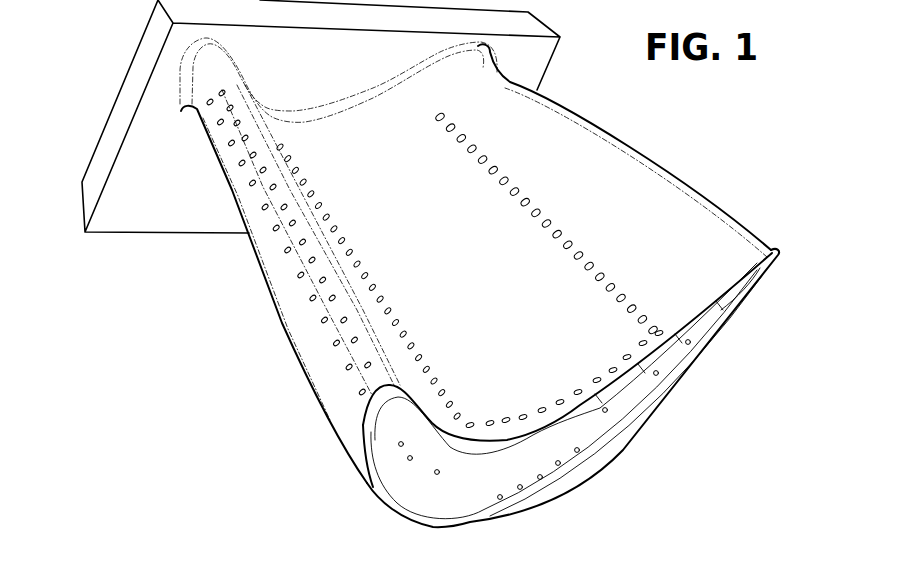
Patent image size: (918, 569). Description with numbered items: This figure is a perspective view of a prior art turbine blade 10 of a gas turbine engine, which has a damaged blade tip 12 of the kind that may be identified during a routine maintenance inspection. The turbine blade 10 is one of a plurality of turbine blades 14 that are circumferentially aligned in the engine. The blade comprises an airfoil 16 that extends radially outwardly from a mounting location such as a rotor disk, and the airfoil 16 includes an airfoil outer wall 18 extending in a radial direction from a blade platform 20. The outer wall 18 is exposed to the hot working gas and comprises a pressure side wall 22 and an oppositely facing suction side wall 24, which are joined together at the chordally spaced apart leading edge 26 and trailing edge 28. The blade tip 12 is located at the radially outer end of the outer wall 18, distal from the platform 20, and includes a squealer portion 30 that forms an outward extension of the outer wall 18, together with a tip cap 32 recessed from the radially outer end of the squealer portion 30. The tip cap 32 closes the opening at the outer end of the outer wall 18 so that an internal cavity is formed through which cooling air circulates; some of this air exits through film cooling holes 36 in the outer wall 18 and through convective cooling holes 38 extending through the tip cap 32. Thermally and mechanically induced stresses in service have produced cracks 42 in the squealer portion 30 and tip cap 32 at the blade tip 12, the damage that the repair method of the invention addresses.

The turbine blade 10 is at (70, 121).
The blade tip 12 is at (461, 503).
The turbine blades 14 is at (177, 377).
The airfoil 16 is at (260, 294).
The airfoil outer wall 18 is at (250, 203).
The blade platform 20 is at (167, 80).
The pressure side wall 22 is at (645, 185).
The suction side wall 24 is at (333, 390).
The leading edge 26 is at (281, 270).
The trailing edge 28 is at (727, 216).
The squealer portion 30 is at (366, 484).
The tip cap 32 is at (432, 507).
The film cooling holes 36 is at (340, 343).
The convective cooling holes 38 is at (533, 503).
The cracks 42 is at (676, 372).